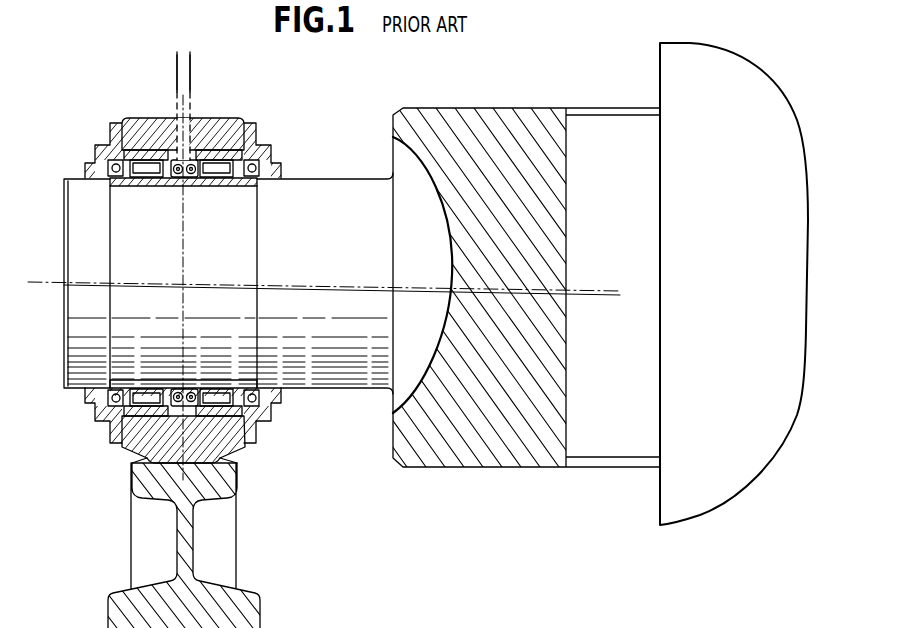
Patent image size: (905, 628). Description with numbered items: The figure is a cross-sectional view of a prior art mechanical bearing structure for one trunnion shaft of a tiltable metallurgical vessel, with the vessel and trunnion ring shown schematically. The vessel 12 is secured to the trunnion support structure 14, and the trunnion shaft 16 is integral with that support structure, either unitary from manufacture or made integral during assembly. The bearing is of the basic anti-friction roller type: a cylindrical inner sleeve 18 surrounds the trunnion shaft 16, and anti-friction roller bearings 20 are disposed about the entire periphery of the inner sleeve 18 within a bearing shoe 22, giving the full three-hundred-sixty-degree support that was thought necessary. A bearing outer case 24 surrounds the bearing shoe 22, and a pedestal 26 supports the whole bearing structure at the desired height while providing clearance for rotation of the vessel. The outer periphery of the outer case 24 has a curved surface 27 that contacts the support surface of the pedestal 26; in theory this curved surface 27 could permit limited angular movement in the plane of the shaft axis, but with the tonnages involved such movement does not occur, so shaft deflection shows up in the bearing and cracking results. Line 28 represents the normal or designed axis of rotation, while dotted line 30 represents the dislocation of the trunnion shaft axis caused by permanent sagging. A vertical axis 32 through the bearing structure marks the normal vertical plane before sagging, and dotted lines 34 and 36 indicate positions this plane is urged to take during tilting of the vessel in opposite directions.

The vessel 12 is at (754, 348).
The trunnion support structure 14 is at (481, 124).
The trunnion shaft 16 is at (72, 218).
The inner sleeve 18 is at (156, 183).
The anti-friction roller bearings 20 is at (218, 400).
The bearing shoe 22 is at (243, 452).
The bearing outer case 24 is at (129, 455).
The pedestal 26 is at (147, 534).
The curved surface 27 is at (240, 453).
The line 28 is at (56, 288).
The dotted line 30 is at (37, 281).
The vertical axis 32 is at (184, 65).
The dotted line 34 is at (177, 82).
The dotted line 36 is at (191, 70).